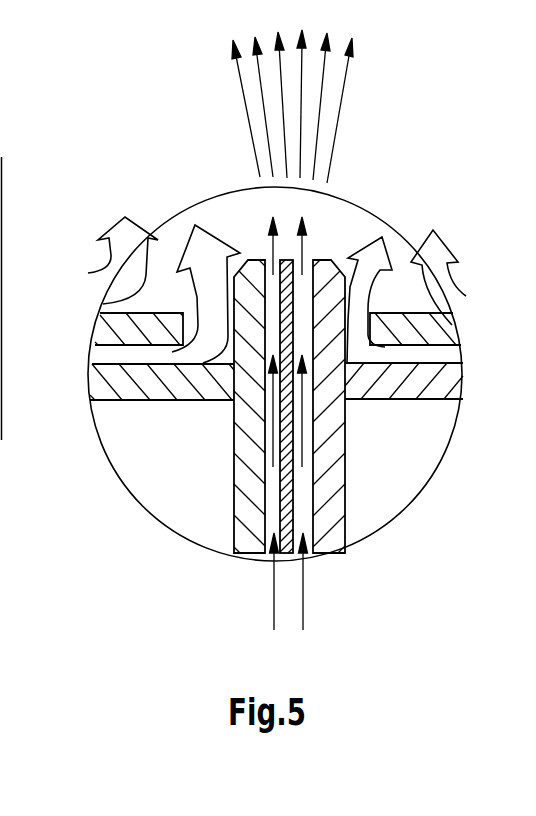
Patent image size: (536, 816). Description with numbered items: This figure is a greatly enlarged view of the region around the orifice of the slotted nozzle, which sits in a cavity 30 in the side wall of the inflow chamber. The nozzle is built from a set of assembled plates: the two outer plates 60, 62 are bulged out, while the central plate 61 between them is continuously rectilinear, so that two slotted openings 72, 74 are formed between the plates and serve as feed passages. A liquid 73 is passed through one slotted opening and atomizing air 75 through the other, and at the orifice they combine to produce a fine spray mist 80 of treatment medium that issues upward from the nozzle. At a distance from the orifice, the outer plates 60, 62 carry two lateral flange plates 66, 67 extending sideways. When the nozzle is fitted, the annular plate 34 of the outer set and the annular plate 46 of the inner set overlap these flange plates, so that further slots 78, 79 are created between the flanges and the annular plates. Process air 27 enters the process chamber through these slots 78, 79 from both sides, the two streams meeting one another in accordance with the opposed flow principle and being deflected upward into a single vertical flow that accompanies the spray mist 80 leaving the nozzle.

The process air 27 is at (123, 238).
The cavity 30 is at (5, 348).
The annular plate 34 is at (463, 332).
The annular plate 46 is at (110, 332).
The outer plate 60 is at (247, 464).
The central plate 61 is at (282, 505).
The outer plate 62 is at (337, 488).
The lateral flange plate 66 is at (130, 383).
The lateral flange plate 67 is at (420, 377).
The slotted opening 72 is at (262, 265).
The liquid 73 is at (276, 600).
The slotted opening 74 is at (306, 262).
The atomizing air 75 is at (305, 602).
The slot 78 is at (168, 350).
The slot 79 is at (362, 354).
The spray mist 80 is at (320, 92).